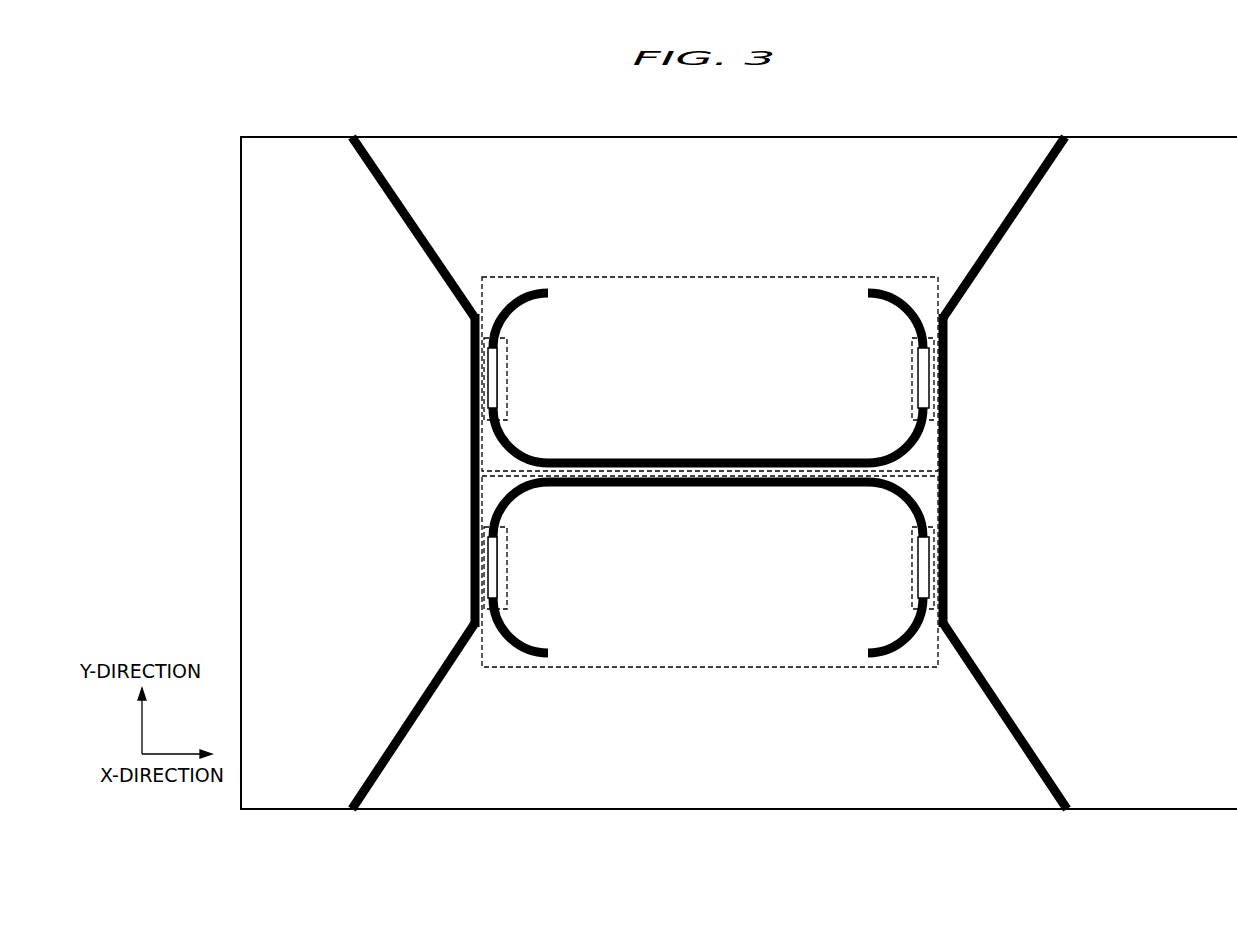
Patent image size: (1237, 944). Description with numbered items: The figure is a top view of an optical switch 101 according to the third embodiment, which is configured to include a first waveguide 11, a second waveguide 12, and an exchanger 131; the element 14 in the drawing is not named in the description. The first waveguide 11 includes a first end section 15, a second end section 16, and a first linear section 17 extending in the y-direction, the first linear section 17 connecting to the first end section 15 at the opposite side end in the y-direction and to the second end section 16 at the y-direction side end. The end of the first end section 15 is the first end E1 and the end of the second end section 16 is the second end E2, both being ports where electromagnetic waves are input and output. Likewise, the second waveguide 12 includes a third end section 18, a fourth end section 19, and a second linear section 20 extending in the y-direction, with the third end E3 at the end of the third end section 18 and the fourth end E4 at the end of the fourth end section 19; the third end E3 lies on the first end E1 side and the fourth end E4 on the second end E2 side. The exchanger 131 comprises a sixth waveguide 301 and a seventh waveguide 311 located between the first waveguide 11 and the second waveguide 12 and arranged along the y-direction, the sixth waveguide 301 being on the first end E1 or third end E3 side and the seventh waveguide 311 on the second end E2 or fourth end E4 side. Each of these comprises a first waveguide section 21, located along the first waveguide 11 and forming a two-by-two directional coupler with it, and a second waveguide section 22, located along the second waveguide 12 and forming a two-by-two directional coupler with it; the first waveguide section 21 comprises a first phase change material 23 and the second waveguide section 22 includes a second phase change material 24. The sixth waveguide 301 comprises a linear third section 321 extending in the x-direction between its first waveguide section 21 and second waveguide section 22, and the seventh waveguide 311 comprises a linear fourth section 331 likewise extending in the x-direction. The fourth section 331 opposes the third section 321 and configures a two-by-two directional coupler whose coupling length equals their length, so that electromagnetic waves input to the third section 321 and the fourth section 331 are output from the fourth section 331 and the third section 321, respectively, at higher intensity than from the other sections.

The optical switch 101 is at (252, 828).
The substrate 14 is at (277, 191).
The first waveguide 11 is at (387, 473).
The first end section 15 is at (455, 655).
The second end section 16 is at (428, 247).
The first linear section 17 is at (472, 450).
The second waveguide 12 is at (1032, 473).
The third end section 18 is at (978, 655).
The fourth end section 19 is at (992, 247).
The second linear section 20 is at (946, 450).
The first waveguide section 21 is at (507, 385).
The second waveguide section 22 is at (911, 385).
The first phase change material 23 is at (496, 372).
The second phase change material 24 is at (920, 372).
The exchanger 131 is at (710, 528).
The sixth waveguide 301 is at (710, 606).
The seventh waveguide 311 is at (710, 506).
The third section 321 is at (705, 487).
The fourth section 331 is at (784, 472).
The first end E1 is at (352, 809).
The second end E2 is at (352, 137).
The third end E3 is at (1067, 809).
The fourth end E4 is at (1065, 137).